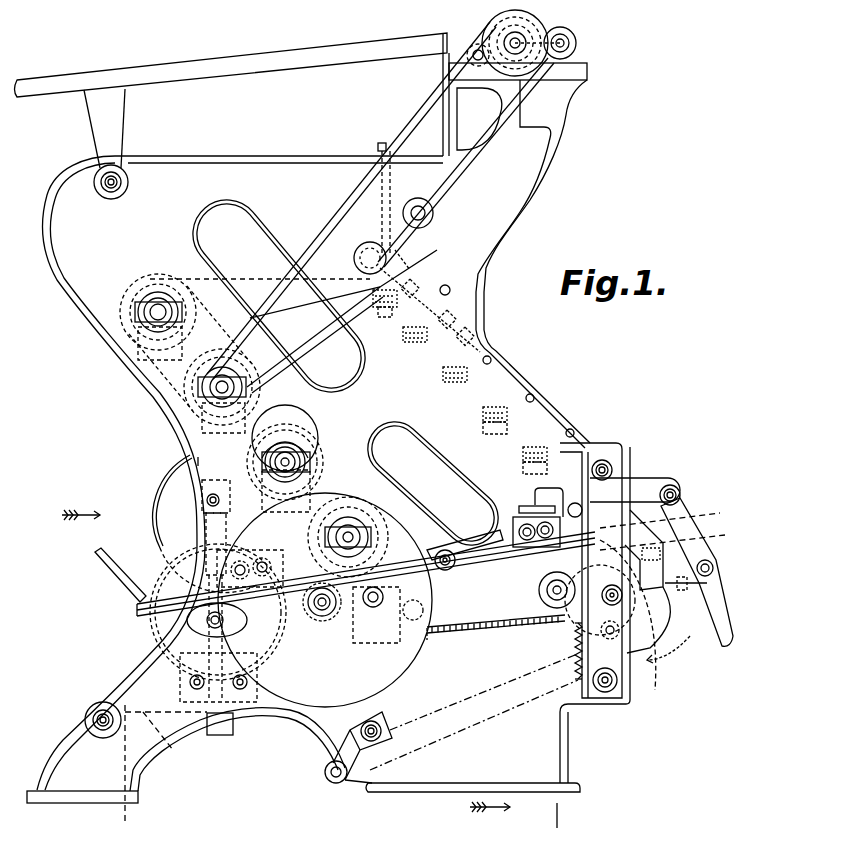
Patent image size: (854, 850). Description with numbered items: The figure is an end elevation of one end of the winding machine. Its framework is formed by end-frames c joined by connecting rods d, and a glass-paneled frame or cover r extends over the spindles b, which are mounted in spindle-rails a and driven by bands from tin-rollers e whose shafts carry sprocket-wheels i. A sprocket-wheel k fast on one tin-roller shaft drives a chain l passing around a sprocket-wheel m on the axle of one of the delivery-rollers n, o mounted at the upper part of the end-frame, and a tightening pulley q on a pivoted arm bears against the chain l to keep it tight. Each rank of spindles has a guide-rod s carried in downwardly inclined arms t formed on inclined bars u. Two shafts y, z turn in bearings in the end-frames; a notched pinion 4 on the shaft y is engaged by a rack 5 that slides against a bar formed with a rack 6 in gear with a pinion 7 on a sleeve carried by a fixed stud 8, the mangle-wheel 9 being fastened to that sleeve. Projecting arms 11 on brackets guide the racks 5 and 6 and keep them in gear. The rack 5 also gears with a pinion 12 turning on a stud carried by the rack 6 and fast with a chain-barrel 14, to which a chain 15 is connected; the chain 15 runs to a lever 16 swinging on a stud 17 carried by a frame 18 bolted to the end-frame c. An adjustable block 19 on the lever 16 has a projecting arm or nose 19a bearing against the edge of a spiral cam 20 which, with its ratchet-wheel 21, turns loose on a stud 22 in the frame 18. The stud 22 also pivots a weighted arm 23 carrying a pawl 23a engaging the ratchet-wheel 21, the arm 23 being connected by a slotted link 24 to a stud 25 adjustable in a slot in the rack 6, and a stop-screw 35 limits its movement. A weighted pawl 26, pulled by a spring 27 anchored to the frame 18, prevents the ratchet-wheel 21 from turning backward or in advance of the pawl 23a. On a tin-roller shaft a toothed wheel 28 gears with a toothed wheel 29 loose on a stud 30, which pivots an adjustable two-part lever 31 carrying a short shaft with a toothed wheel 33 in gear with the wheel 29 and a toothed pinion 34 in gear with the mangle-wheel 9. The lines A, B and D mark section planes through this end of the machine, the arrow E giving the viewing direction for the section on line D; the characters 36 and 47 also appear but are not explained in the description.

The end-frames c is at (308, 418).
The section line D D is at (498, 602).
The frame or cover r is at (228, 80).
The rods d is at (95, 183).
The delivery-roller n is at (492, 26).
The delivery-roller o is at (577, 42).
The sprocket-wheel m is at (560, 25).
The chain l is at (410, 115).
The guide 47 is at (380, 146).
The spindles b is at (405, 272).
The tightening pulley q is at (354, 260).
The sprocket-wheel k is at (165, 405).
The rack 6 is at (432, 540).
The tin-rollers e is at (138, 306).
The sprocket-wheels i is at (254, 416).
The toothed wheel 28 is at (300, 445).
The spindle-rails a is at (520, 452).
The guide-rods s is at (352, 250).
The downwardly inclined arms t is at (525, 335).
The inclined bars u is at (507, 373).
The stop-screw 35 is at (532, 497).
The projecting arms 11 is at (388, 542).
The slotted link 24 is at (495, 546).
The stud 25 is at (440, 552).
The rack 5 is at (366, 574).
The pinion 12 is at (430, 602).
The chain 15 is at (475, 630).
The chain-barrel 14 is at (439, 647).
The toothed wheel 33 is at (172, 568).
The pinion 4 is at (538, 600).
The shaft y is at (540, 594).
The mangle-wheel 9 is at (325, 600).
The pinion 7 is at (310, 612).
The fixed stud 8 is at (320, 622).
The shaft z is at (370, 608).
The section line B B is at (183, 455).
The section line A A is at (78, 462).
The toothed wheel 29 is at (107, 518).
The stud 30 is at (205, 500).
The toothed pinion 34 is at (190, 628).
The gear 36 is at (185, 690).
The lever 31 is at (222, 735).
The stud 22 is at (451, 710).
The spring 27 is at (574, 650).
The arrow E is at (490, 820).
The frame 18 is at (630, 485).
The stud 17 is at (682, 493).
The arm 23 is at (673, 516).
The pawl 23a is at (679, 538).
The block 19 is at (720, 575).
The lever 16 is at (700, 592).
The projecting arm or nose 19a is at (685, 647).
The ratchet-wheel 21 is at (644, 552).
The cam 20 is at (640, 650).
The weighted pawl 26 is at (648, 680).